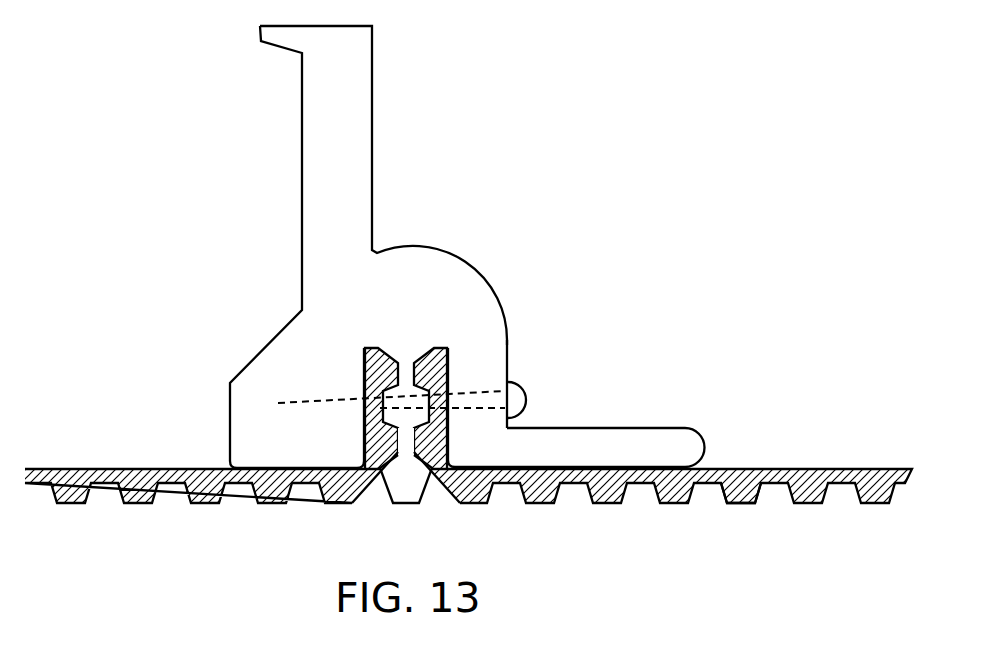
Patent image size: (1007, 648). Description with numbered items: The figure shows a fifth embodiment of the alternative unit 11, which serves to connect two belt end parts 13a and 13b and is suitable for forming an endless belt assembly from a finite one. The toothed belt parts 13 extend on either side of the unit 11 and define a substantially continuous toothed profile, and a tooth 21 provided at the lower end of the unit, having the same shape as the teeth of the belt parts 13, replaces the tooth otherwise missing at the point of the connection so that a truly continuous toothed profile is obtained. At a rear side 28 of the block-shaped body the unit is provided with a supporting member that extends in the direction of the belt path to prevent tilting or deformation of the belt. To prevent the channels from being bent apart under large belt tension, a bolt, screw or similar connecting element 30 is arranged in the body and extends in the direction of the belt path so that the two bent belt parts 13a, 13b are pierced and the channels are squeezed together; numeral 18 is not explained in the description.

The alternative unit 11 is at (500, 199).
The belt part 13 is at (73, 480).
The belt end part 13a is at (438, 370).
The belt end part 13b is at (375, 377).
The tooth 18 is at (747, 502).
The tooth 21 is at (405, 488).
The rear side 28 is at (510, 368).
The connecting element 30 is at (516, 401).